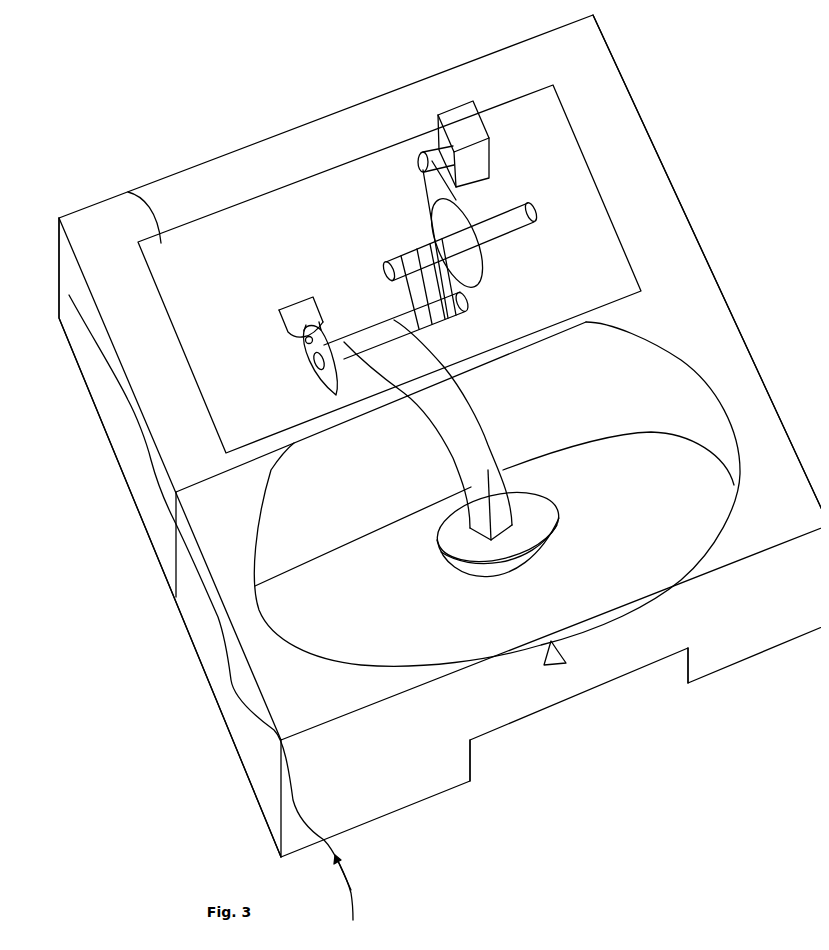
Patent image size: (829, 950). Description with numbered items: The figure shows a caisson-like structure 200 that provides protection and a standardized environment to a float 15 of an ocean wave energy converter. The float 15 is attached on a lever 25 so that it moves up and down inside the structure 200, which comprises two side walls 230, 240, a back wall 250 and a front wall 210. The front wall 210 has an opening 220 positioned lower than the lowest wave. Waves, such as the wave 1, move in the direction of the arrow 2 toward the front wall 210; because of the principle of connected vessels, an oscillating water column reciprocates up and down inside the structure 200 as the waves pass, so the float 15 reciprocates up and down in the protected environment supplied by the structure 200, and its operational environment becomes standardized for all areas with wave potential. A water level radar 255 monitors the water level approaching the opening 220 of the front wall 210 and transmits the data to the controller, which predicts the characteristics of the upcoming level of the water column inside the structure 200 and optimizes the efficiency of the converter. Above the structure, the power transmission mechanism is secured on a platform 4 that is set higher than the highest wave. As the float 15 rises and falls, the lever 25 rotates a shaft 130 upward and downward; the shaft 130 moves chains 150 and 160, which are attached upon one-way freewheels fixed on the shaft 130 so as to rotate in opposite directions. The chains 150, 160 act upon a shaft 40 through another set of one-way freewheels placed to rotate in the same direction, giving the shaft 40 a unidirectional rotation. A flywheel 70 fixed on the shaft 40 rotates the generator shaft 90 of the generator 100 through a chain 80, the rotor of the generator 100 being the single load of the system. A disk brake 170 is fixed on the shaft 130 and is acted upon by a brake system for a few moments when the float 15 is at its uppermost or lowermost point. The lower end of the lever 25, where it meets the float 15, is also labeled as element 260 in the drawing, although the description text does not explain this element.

The wave 1 is at (349, 904).
The arrow 2 is at (340, 866).
The platform 4 is at (127, 192).
The float 15 is at (495, 584).
The lever 25 is at (444, 457).
The shaft 40 is at (527, 207).
The flywheel 70 is at (469, 285).
The chain 80 is at (427, 183).
The generator shaft 90 is at (421, 153).
The generator 100 is at (440, 114).
The shaft 130 is at (367, 325).
The chain 150 is at (408, 280).
The chain 160 is at (434, 268).
The disk brake 170 is at (307, 345).
The caisson-like structure 200 is at (770, 440).
The front wall 210 is at (487, 707).
The opening 220 is at (652, 684).
The side wall 230 is at (252, 740).
The side wall 240 is at (816, 497).
The back wall 250 is at (296, 552).
The water level radar 255 is at (545, 655).
The chute outlet 260 is at (469, 503).